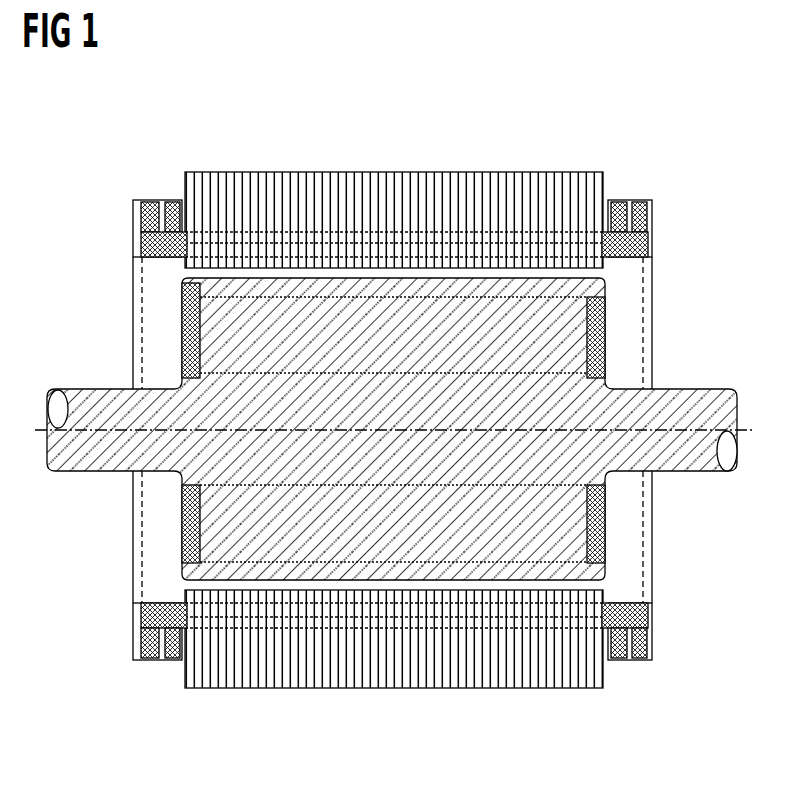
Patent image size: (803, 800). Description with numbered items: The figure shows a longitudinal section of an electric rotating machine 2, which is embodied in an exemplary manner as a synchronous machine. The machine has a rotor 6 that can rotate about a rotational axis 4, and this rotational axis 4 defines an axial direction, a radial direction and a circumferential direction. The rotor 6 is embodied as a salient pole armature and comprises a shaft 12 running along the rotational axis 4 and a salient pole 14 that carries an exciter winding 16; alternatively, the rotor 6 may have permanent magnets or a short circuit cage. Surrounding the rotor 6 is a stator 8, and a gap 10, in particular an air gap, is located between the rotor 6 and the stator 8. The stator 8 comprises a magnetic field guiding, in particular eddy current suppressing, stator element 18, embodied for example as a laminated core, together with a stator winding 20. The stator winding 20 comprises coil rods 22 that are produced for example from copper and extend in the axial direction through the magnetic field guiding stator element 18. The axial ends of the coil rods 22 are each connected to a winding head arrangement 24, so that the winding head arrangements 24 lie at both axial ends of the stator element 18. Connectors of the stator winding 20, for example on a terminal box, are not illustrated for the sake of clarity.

The electric rotating machine 2 is at (518, 98).
The rotational axis 4 is at (46, 430).
The rotor 6 is at (576, 331).
The stator 8 is at (586, 204).
The gap 10 is at (176, 274).
The shaft 12 is at (96, 468).
The salient pole 14 is at (198, 352).
The exciter winding 16 is at (183, 313).
The stator element 18 is at (263, 180).
The stator winding 20 is at (318, 238).
The coil rods 22 is at (320, 602).
The winding head arrangement 24 is at (149, 178).